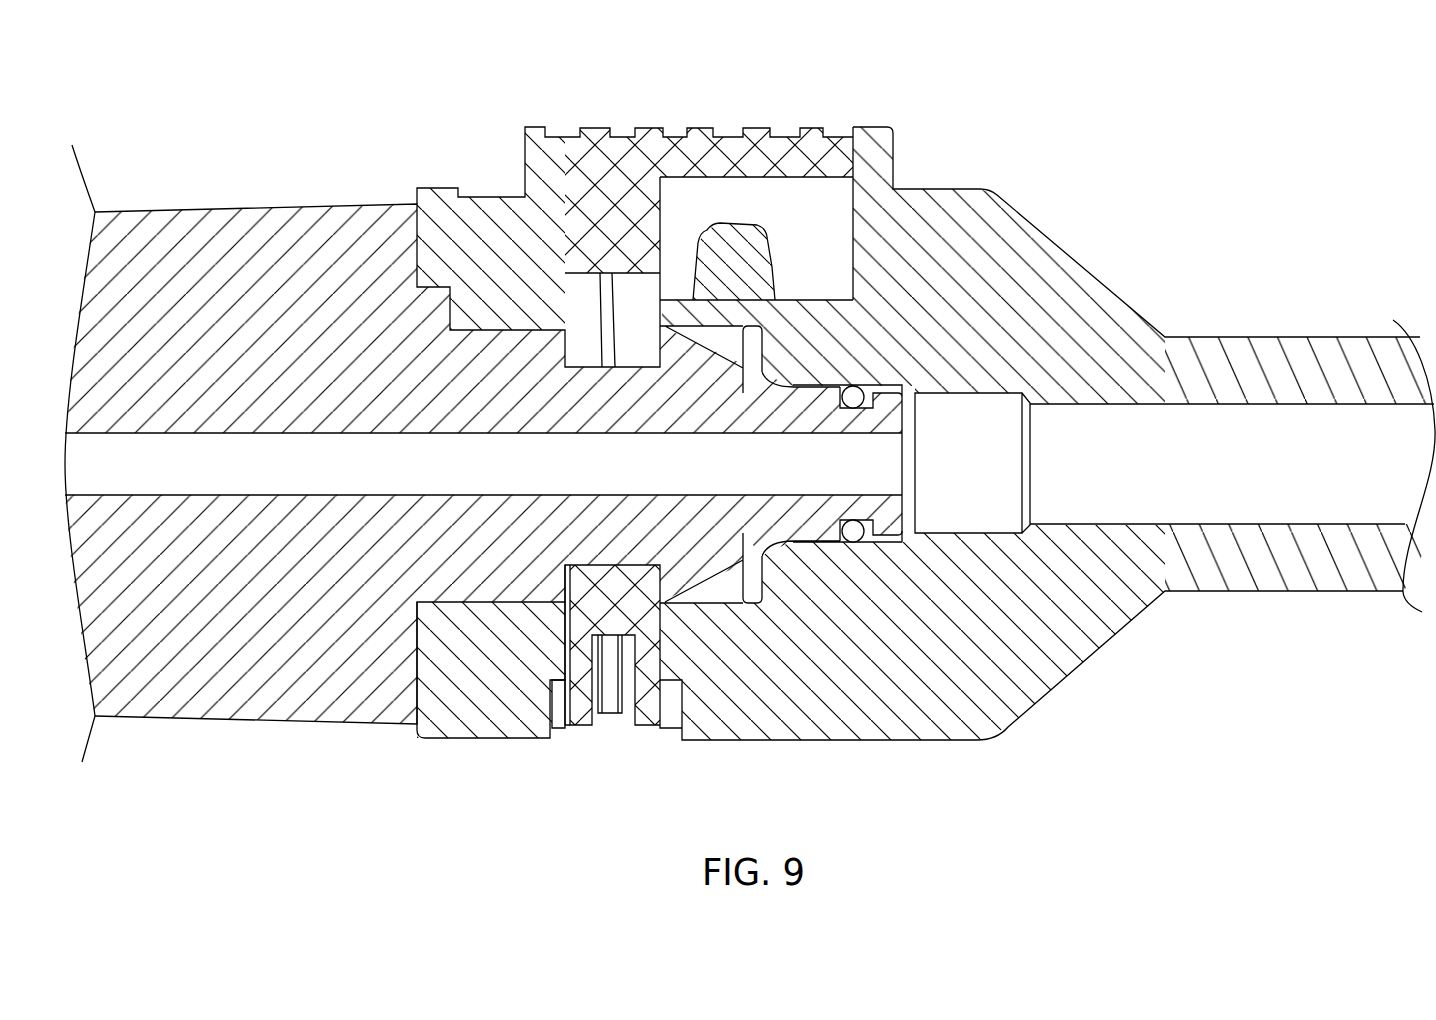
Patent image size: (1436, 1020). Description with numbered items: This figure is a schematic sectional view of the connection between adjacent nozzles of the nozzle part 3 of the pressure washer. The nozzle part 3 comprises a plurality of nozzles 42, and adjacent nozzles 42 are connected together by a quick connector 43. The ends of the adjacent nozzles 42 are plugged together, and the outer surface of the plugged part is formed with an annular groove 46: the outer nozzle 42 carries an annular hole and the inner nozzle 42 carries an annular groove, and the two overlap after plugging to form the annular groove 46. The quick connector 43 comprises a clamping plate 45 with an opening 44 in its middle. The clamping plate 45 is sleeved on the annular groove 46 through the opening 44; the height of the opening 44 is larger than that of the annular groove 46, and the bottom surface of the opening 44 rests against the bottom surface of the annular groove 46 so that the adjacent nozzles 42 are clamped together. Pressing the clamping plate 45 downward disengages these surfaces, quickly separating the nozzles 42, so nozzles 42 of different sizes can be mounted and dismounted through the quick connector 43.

The nozzle part 3 is at (1247, 285).
The nozzle 42 is at (318, 277).
The quick connector 43 is at (638, 84).
The opening 44 is at (693, 133).
The clamping plate 45 is at (584, 137).
The annular groove 46 is at (562, 331).